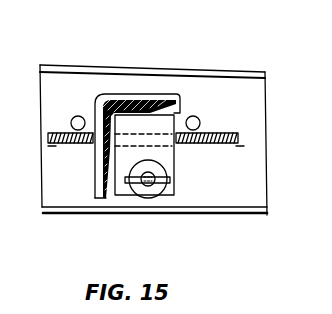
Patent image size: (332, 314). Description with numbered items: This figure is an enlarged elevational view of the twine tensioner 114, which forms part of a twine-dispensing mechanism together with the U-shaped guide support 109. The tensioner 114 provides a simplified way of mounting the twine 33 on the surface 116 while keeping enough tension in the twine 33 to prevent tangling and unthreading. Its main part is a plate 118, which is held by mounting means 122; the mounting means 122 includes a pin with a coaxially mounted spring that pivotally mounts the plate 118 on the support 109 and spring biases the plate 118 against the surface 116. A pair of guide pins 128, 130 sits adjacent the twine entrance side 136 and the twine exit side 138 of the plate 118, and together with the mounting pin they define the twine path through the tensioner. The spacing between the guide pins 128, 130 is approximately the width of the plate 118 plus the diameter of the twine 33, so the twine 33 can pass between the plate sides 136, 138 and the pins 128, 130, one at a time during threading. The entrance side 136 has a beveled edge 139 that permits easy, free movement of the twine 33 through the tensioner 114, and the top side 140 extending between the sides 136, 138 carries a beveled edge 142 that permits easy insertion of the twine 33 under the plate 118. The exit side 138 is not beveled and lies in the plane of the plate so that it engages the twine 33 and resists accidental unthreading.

The U-shaped guide support 109 is at (155, 70).
The twine tensioner 114 is at (189, 214).
The surface 116 is at (257, 88).
The plate 118 is at (165, 157).
The mounting means 122 is at (141, 196).
The guide pin 128 is at (75, 116).
The guide pin 130 is at (191, 115).
The twine 33 is at (216, 133).
The twine entrance side 136 is at (95, 168).
The twine exit side 138 is at (172, 170).
The beveled edge 139 is at (96, 160).
The top side 140 is at (124, 95).
The beveled edge 142 is at (163, 106).